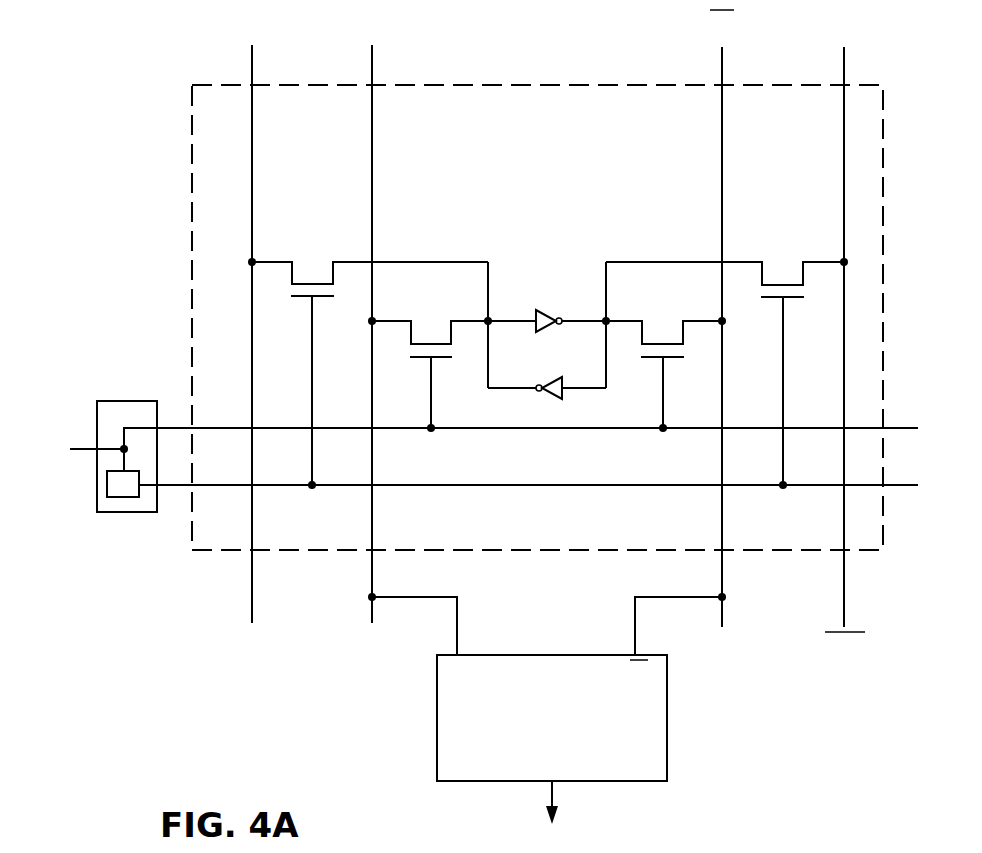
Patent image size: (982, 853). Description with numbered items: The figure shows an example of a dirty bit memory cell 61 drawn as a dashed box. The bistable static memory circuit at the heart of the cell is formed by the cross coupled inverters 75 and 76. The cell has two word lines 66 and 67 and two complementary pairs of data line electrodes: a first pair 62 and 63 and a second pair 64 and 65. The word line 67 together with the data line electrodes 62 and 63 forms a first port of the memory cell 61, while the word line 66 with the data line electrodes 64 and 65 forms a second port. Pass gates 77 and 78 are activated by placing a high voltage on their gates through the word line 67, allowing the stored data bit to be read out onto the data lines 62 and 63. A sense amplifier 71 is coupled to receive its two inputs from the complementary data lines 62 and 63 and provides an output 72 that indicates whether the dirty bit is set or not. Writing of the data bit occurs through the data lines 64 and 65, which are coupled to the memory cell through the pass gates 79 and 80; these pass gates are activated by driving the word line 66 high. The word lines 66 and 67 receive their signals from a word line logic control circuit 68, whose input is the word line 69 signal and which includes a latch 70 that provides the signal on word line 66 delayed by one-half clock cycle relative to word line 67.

The dirty bit memory cell 61 is at (530, 84).
The data line electrode 62 is at (370, 615).
The data line electrode 63 is at (720, 615).
The data line electrode 64 is at (252, 610).
The data line electrode 65 is at (845, 612).
The word line 66 is at (178, 488).
The word line 67 is at (183, 424).
The word line logic control circuit 68 is at (117, 398).
The word line 69 is at (93, 452).
The latch 70 is at (124, 500).
The sense amplifier 71 is at (537, 650).
The output 72 is at (560, 790).
The inverter 75 is at (552, 402).
The inverter 76 is at (548, 312).
The pass gate 77 is at (429, 333).
The pass gate 78 is at (661, 336).
The pass gate 79 is at (310, 262).
The pass gate 80 is at (778, 274).